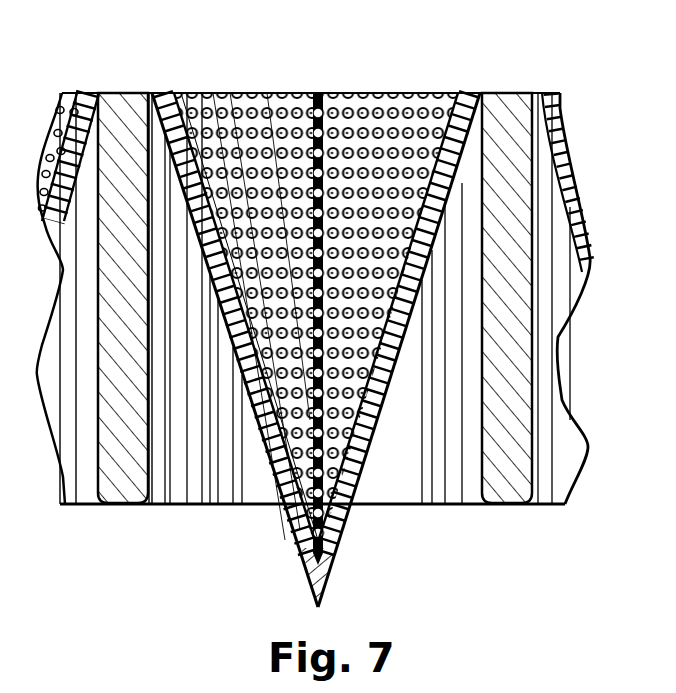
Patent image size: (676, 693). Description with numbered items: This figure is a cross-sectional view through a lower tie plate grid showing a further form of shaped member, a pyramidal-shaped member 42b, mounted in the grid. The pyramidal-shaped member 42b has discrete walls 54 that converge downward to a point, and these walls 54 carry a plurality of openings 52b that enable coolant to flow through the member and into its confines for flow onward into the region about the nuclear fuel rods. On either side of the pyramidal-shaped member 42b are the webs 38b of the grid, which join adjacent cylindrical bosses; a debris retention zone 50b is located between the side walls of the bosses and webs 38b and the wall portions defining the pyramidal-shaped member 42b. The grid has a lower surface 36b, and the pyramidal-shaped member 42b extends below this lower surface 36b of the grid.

The lower surface 36b is at (490, 506).
The web 38b is at (515, 360).
The pyramidal-shaped member 42b is at (316, 350).
The debris retention zone 50b is at (468, 253).
The openings 52b is at (388, 123).
The walls 54 is at (354, 372).